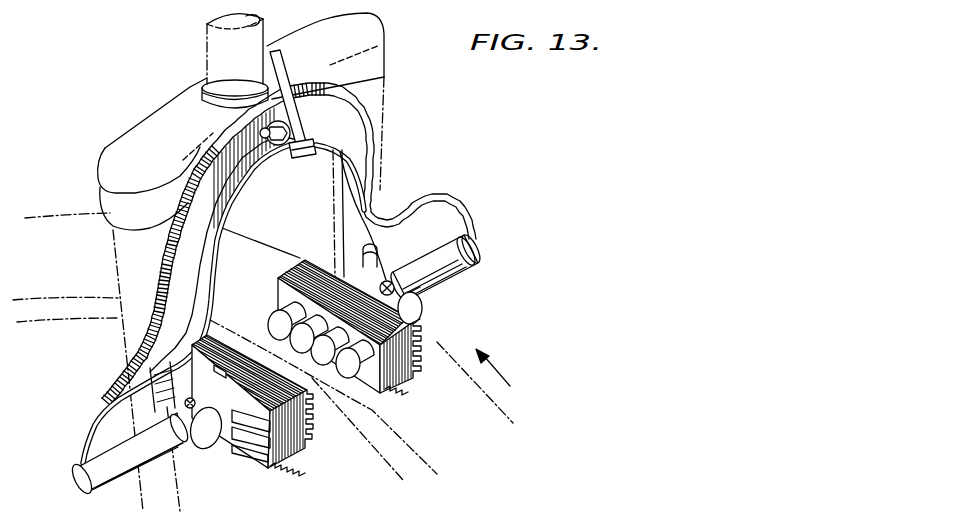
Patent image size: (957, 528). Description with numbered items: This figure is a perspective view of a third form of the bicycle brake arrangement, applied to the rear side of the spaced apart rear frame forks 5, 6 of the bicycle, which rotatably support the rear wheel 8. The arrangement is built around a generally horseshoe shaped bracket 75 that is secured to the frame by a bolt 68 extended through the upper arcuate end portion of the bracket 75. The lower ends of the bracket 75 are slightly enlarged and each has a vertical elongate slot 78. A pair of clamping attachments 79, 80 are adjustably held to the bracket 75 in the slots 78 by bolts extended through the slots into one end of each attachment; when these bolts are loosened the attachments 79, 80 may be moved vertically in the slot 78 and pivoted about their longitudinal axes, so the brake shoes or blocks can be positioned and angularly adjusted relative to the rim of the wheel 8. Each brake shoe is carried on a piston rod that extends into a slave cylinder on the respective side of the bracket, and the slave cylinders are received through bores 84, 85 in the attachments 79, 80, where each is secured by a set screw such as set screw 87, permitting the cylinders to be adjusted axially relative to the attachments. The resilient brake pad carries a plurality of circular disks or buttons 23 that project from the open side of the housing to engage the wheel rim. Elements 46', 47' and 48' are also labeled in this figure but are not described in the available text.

The rear frame fork 5 is at (113, 247).
The rear frame fork 6 is at (379, 187).
The rear wheel 8 is at (517, 403).
The circular disks or buttons 23 is at (280, 336).
The lower cable 46' is at (177, 303).
The upper cable 47' is at (396, 177).
The tightening strap 48' is at (301, 94).
The bolt 68 is at (261, 131).
The horseshoe shaped bracket 75 is at (367, 122).
The vertical elongate slot 78 is at (363, 253).
The clamping attachment 79 is at (193, 445).
The clamping attachment 80 is at (420, 308).
The bore 84 is at (178, 441).
The bore 85 is at (446, 284).
The set screw 87 is at (391, 280).